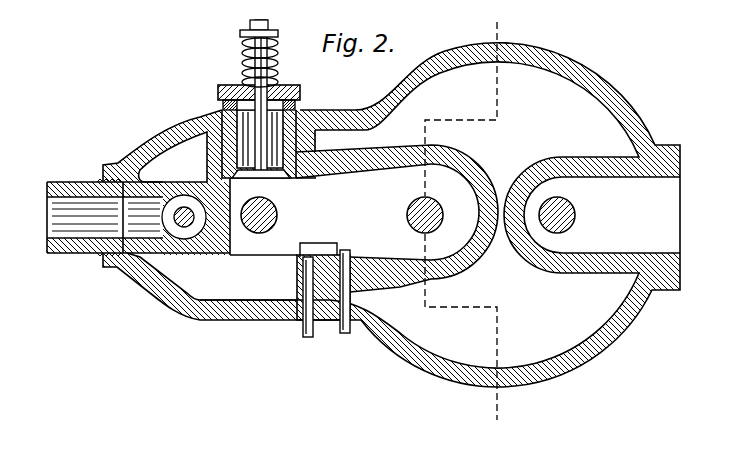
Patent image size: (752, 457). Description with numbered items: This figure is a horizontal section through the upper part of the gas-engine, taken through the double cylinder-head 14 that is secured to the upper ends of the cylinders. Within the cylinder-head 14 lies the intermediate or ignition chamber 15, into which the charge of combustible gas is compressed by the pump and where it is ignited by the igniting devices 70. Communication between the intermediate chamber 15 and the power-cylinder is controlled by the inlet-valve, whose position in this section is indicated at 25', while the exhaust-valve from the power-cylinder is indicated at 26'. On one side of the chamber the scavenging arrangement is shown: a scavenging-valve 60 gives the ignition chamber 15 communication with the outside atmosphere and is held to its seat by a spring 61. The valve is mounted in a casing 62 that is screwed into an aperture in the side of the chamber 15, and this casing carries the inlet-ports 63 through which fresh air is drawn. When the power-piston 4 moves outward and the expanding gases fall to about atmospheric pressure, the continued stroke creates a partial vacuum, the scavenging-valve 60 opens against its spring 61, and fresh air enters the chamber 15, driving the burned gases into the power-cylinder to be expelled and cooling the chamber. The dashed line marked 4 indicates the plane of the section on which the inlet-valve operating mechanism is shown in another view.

The double cylinder-head 14 is at (450, 50).
The intermediate chamber 15 is at (315, 232).
The pivot pin 25' is at (412, 209).
The pin 26' is at (573, 215).
The scavenging-valve 60 is at (302, 117).
The spring 61 is at (277, 53).
The casing 62 is at (217, 113).
The inlet-ports 63 is at (218, 96).
The igniting devices 70 is at (332, 310).
The power-piston 4 is at (462, 223).